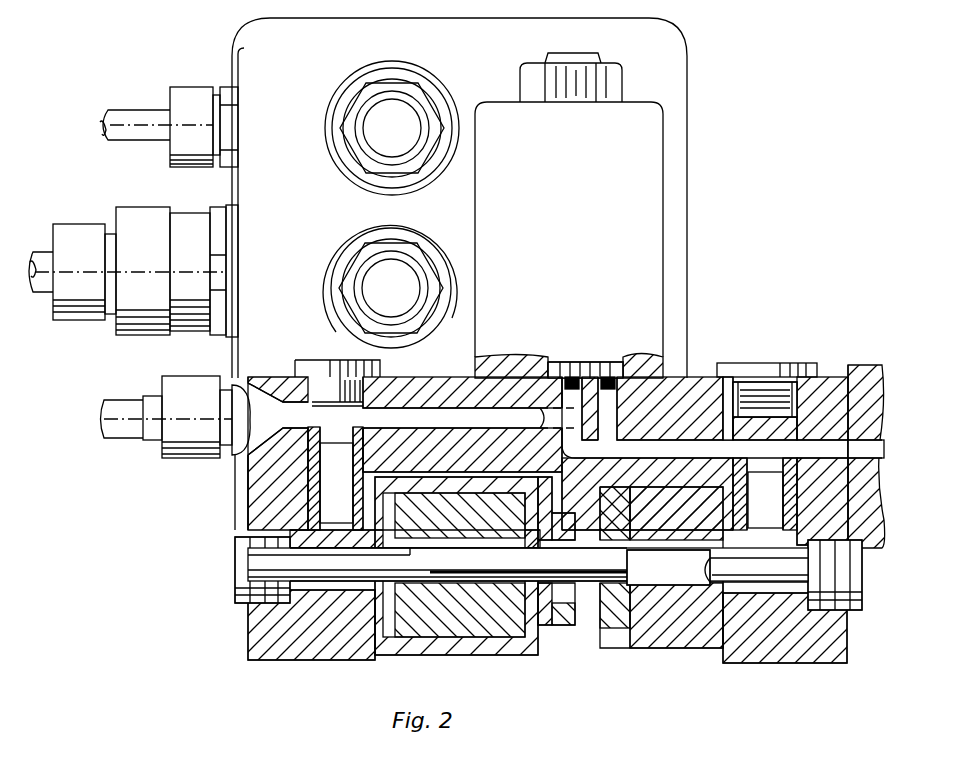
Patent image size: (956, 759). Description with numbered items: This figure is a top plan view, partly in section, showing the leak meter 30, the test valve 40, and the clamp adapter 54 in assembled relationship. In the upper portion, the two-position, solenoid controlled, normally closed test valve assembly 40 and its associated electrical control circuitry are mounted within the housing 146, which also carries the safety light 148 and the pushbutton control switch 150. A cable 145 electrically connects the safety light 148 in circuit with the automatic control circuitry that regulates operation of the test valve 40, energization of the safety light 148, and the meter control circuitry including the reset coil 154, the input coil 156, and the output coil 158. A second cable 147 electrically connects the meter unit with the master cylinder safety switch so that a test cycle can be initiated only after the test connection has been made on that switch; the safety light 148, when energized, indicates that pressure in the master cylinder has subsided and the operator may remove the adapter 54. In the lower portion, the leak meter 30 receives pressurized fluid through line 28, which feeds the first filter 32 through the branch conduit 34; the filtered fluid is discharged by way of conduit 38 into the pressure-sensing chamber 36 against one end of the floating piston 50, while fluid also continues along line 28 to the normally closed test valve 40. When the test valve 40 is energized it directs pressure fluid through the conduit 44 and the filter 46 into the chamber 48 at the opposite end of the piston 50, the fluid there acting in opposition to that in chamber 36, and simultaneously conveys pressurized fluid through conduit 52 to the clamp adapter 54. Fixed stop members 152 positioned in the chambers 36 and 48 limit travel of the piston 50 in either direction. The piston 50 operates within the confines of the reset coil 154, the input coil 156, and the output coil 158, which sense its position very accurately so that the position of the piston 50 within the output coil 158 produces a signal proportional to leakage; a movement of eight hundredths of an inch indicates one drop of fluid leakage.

The second cable 147 is at (127, 112).
The cable 145 is at (42, 265).
The pushbutton control switch 150 is at (394, 112).
The safety light 148 is at (389, 270).
The housing 146 is at (683, 36).
The test valve assembly 40 is at (645, 213).
The line 28 is at (120, 406).
The branch conduit 34 is at (345, 438).
The conduit 44 is at (685, 420).
The conduit 52 is at (820, 445).
The clamp adapter assembly 54 is at (866, 365).
The filter 46 is at (790, 505).
The chamber 48 is at (612, 545).
The leak meter 30 is at (240, 467).
The first filter 32 is at (262, 503).
The conduit 38 is at (337, 535).
The pressure-sensing chamber 36 is at (300, 582).
The fixed stop members 152 is at (330, 575).
The reset coil 154 is at (485, 620).
The floating piston 50 is at (556, 565).
The input coil 156 is at (585, 615).
The output coil 158 is at (700, 635).